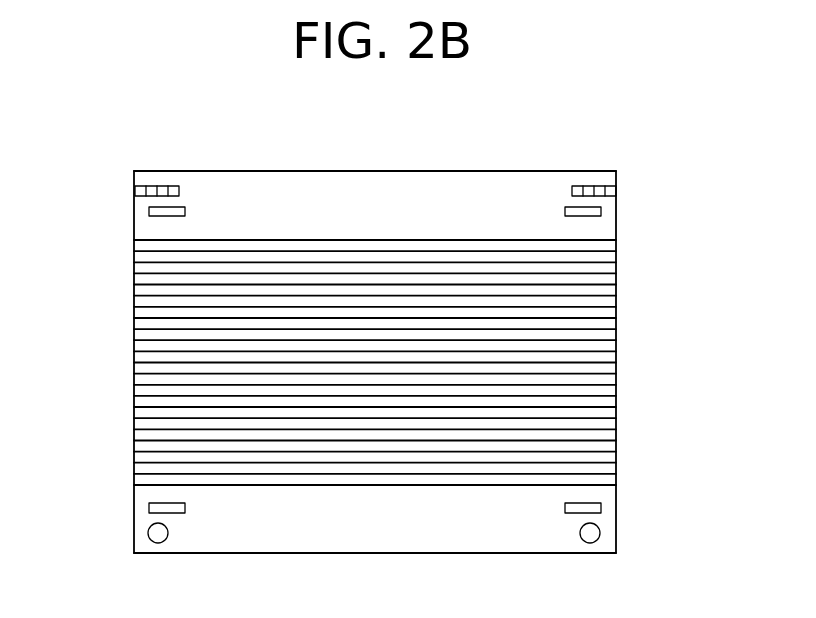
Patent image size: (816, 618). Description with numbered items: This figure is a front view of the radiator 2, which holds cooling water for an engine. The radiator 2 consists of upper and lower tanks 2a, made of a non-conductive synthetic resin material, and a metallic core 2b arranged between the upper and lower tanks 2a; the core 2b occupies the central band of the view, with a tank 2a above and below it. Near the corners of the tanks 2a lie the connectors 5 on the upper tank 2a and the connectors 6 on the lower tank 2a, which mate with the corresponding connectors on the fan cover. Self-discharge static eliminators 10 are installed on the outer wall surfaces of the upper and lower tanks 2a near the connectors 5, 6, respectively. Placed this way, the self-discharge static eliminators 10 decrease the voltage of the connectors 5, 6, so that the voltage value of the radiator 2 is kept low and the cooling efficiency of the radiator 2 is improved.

The radiator 2 is at (642, 210).
The upper and lower tanks 2a is at (367, 183).
The core 2b is at (584, 374).
The connector 5 is at (148, 165).
The connector 6 is at (570, 533).
The self-discharge static eliminator 10 is at (185, 211).